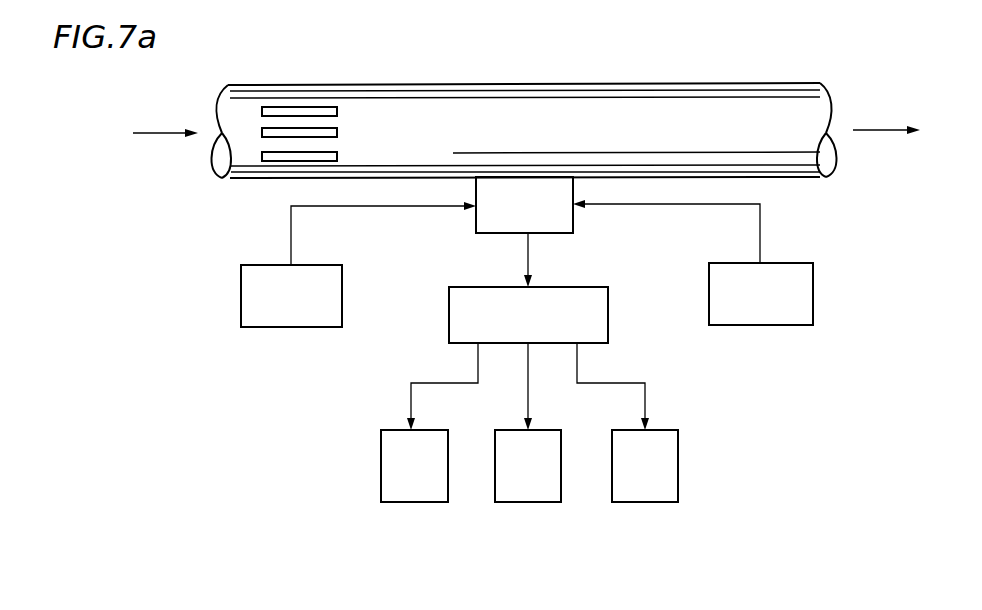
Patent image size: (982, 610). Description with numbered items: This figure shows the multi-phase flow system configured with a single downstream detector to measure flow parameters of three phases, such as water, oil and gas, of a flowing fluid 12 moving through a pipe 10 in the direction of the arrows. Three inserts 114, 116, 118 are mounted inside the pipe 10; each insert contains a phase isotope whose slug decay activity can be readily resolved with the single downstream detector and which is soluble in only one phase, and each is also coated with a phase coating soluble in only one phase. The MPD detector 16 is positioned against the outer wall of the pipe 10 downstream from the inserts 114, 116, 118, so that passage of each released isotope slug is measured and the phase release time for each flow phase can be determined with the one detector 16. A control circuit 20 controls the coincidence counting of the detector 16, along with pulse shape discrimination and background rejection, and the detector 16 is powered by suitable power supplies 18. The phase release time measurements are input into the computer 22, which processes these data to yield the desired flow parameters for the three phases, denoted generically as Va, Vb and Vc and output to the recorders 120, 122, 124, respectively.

The pipe 10 is at (508, 83).
The flowing fluid 12 is at (157, 133).
The insert 114 is at (300, 107).
The insert 116 is at (337, 133).
The insert 118 is at (337, 157).
The detector 16 is at (573, 222).
The power supplies 18 is at (813, 297).
The control circuit 20 is at (241, 300).
The computer 22 is at (608, 313).
The recorder 120 is at (416, 502).
The recorder 122 is at (528, 502).
The recorder 124 is at (638, 502).